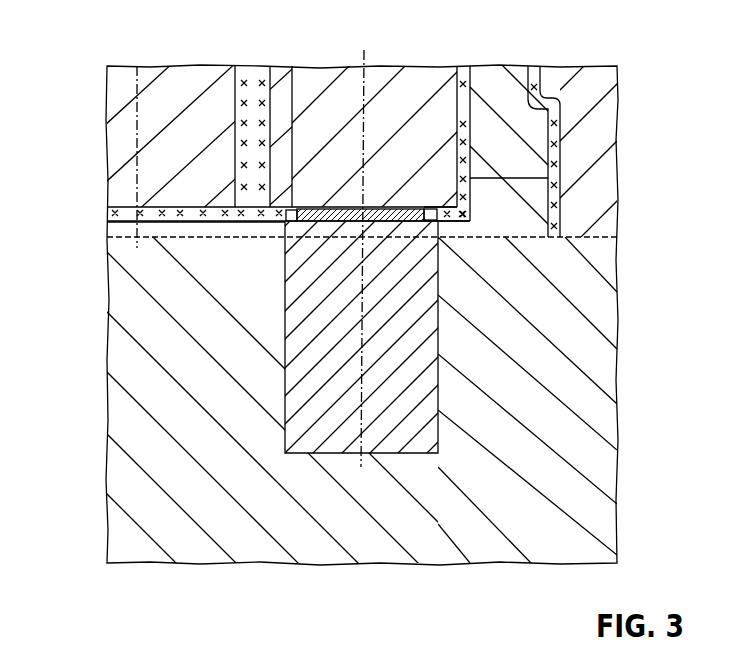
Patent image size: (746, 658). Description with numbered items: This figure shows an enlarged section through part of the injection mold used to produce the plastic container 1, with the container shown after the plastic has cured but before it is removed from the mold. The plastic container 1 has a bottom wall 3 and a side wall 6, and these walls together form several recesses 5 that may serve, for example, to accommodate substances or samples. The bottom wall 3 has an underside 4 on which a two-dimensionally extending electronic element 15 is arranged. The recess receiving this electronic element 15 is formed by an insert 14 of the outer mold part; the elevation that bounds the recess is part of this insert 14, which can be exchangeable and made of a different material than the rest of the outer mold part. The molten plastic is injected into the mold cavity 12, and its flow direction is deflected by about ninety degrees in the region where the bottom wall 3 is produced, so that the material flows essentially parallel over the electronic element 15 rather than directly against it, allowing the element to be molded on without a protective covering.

The plastic container 1 is at (560, 168).
The bottom wall 3 is at (165, 214).
The underside 4 is at (127, 221).
The recesses 5 is at (235, 167).
The side wall 6 is at (460, 117).
The mold cavity 12 is at (533, 84).
The insert 14 is at (420, 358).
The two-dimensionally extending electronic element 15 is at (395, 207).